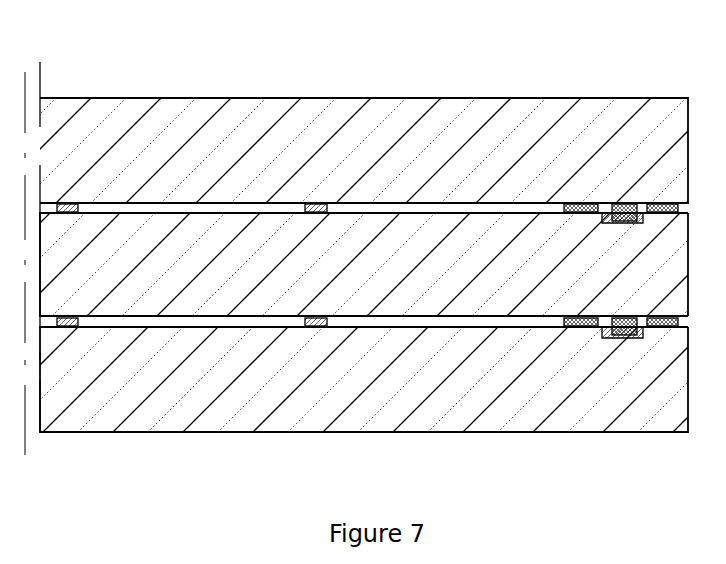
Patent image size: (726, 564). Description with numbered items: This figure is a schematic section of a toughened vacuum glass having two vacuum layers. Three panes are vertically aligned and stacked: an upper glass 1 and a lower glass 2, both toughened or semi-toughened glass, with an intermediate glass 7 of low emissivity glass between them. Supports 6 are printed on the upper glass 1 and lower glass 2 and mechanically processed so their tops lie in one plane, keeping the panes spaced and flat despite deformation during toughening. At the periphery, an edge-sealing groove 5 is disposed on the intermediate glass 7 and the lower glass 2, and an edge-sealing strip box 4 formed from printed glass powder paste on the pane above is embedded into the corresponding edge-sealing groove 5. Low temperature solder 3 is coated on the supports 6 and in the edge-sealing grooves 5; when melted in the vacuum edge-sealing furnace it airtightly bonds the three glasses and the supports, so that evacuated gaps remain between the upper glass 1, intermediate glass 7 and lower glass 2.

The upper glass 1 is at (180, 158).
The lower glass 2 is at (410, 363).
The low temperature solder 3 is at (600, 207).
The edge-sealing strip box 4 is at (625, 207).
The edge-sealing groove 5 is at (607, 330).
The support 6 is at (313, 327).
The intermediate glass 7 is at (230, 268).